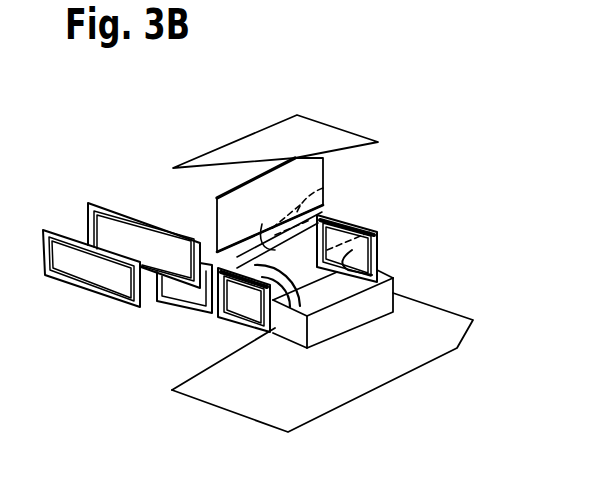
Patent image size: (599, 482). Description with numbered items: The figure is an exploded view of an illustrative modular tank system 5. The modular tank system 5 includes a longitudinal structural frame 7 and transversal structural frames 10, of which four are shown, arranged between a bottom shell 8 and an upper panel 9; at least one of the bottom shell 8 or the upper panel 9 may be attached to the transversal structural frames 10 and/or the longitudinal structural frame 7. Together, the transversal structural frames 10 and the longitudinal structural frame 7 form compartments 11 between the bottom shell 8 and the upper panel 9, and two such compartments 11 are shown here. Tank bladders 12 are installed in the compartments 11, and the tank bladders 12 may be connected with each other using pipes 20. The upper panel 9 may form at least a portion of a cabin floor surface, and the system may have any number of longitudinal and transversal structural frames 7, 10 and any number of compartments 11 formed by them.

The modular tank system 5 is at (178, 125).
The longitudinal structural frame 7 is at (326, 165).
The bottom shell 8 is at (254, 395).
The upper panel 9 is at (313, 137).
The transversal structural frames 10 is at (370, 226).
The compartments 11 is at (325, 187).
The tank bladders 12 is at (212, 244).
The pipes 20 is at (322, 330).